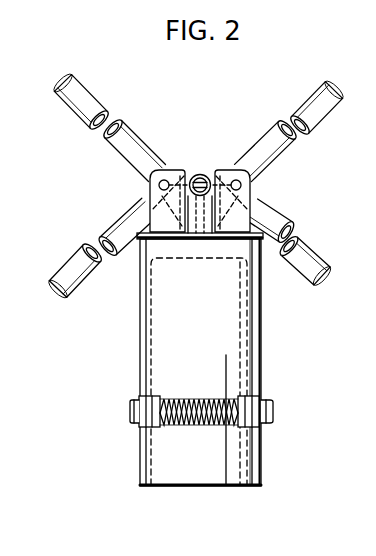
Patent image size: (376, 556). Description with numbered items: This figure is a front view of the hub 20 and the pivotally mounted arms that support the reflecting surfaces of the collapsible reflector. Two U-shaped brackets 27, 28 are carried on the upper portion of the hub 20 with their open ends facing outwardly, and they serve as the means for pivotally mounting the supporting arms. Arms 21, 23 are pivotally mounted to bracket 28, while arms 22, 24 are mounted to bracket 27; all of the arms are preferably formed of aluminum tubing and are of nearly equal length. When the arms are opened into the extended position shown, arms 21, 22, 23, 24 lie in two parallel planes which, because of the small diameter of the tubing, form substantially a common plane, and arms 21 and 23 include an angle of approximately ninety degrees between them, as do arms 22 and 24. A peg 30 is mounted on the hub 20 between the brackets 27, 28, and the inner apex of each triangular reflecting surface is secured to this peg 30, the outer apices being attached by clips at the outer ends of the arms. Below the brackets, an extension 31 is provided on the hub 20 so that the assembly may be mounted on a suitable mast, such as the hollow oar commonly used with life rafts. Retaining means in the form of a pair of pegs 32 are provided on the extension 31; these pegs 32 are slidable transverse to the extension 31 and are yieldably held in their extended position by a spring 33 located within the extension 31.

The hub 20 is at (261, 239).
The supporting arm 21 is at (88, 125).
The supporting arm 22 is at (324, 259).
The supporting arm 23 is at (97, 267).
The supporting arm 24 is at (287, 159).
The U-shaped bracket 27 is at (244, 219).
The U-shaped bracket 28 is at (154, 214).
The peg 30 is at (201, 175).
The extension 31 is at (262, 366).
The peg 32 is at (274, 421).
The spring 33 is at (163, 426).